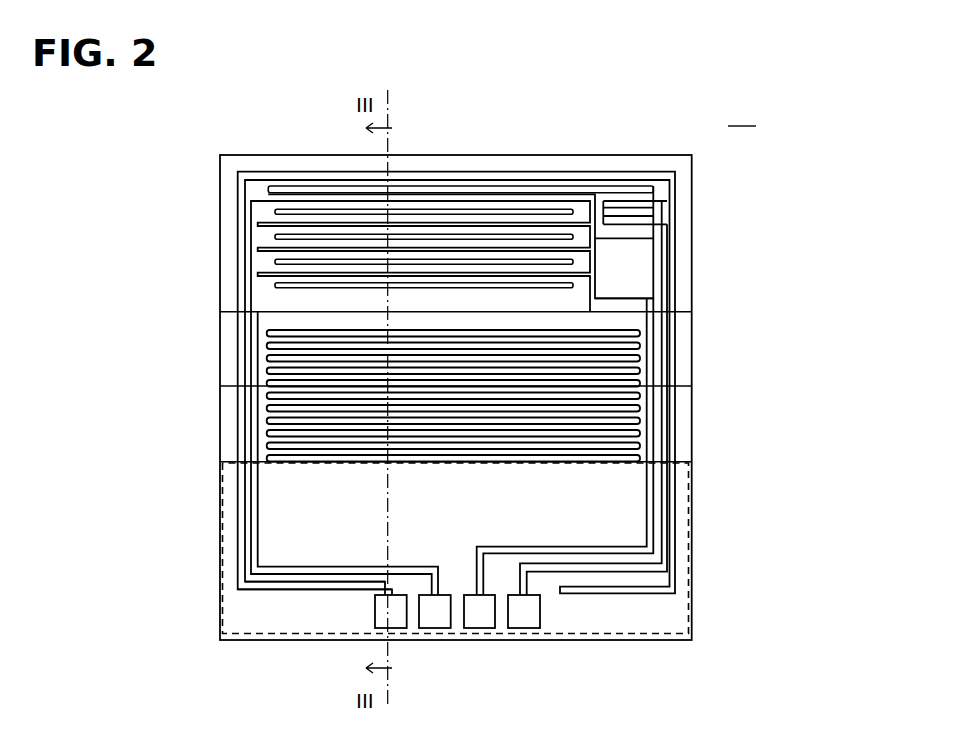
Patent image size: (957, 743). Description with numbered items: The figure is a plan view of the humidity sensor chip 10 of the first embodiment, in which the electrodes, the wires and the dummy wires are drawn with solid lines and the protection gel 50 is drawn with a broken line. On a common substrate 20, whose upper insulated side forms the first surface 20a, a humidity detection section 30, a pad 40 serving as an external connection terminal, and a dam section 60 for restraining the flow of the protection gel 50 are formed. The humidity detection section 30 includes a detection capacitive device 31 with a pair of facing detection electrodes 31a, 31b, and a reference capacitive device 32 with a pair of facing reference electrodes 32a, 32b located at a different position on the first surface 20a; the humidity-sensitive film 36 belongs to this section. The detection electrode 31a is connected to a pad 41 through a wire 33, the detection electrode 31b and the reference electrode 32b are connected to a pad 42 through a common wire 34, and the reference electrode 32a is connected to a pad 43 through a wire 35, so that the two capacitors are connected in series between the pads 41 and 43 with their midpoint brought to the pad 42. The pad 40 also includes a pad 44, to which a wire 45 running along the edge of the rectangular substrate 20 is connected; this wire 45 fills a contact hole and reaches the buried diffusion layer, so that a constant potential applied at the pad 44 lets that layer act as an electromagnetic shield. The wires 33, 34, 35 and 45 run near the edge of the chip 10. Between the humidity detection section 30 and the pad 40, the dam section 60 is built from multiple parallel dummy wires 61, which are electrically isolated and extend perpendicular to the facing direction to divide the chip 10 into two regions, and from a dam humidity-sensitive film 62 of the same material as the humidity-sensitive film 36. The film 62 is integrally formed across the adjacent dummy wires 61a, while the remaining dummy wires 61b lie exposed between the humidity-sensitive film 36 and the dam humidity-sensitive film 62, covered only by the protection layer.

The humidity sensor chip 10 is at (742, 114).
The substrate 20 is at (692, 612).
The first surface 20a is at (228, 345).
The humidity detection section 30 is at (635, 108).
The detection capacitive device 31 is at (555, 184).
The detection electrode 31a is at (267, 196).
The detection electrode 31b is at (313, 187).
The reference capacitive device 32 is at (622, 184).
The reference electrode 32a is at (633, 226).
The reference electrode 32b is at (628, 240).
The wire 33 is at (250, 542).
The common wire 34 is at (650, 331).
The wire 35 is at (663, 360).
The humidity-sensitive film 36 is at (676, 186).
The pad 40 is at (449, 646).
The pad 41 is at (435, 618).
The pad 42 is at (480, 618).
The pad 43 is at (525, 618).
The pad 44 is at (377, 618).
The wire 45 is at (260, 590).
The protection gel 50 is at (655, 620).
The dam section 60 is at (376, 375).
The dummy wire 61 is at (376, 396).
The dummy wire 61a is at (268, 421).
The dummy wire 61b is at (268, 371).
The dam humidity-sensitive film 62 is at (690, 426).